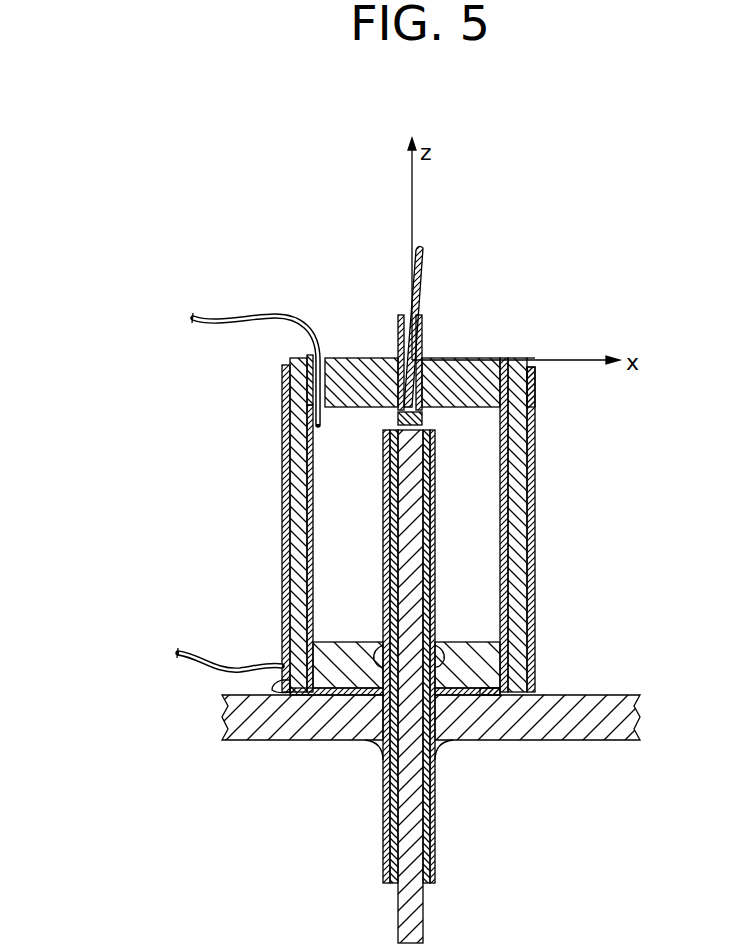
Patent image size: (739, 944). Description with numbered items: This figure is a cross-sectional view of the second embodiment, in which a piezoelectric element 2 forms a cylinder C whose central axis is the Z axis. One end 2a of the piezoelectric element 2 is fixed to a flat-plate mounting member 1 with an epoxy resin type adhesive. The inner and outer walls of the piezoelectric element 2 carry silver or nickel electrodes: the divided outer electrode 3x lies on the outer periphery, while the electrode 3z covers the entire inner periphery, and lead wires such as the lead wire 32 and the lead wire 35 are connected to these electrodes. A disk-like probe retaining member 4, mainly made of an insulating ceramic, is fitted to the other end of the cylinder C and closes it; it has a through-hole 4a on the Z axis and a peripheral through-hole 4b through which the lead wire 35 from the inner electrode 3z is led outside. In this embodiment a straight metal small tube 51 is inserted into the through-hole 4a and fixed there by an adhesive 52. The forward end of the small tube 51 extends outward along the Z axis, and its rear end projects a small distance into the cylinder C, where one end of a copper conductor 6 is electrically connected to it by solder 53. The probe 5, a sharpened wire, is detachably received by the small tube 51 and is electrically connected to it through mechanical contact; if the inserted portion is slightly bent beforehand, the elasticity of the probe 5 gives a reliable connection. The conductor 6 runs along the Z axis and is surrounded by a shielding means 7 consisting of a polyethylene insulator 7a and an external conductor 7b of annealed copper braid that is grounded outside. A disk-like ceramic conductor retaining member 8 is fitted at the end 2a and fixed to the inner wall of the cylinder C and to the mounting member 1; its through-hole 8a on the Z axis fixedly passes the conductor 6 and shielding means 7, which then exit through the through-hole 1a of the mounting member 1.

The mounting member 1 is at (578, 697).
The through-hole 1a is at (372, 728).
The piezoelectric element 2 is at (290, 392).
The one end of the piezoelectric element 2a is at (300, 695).
The outer electrode 3x is at (282, 437).
The inner electrode 3z is at (300, 500).
The probe retaining member 4 is at (419, 350).
The through-hole 4a is at (434, 382).
The through-hole 4b is at (305, 354).
The probe 5 is at (423, 251).
The small tube 51 is at (423, 326).
The adhesive 52 is at (400, 352).
The solder 53 is at (398, 418).
The conductor 6 is at (412, 458).
The shielding means 7 is at (489, 656).
The insulator 7a is at (427, 536).
The external conductor 7b is at (436, 585).
The conductor retaining member 8 is at (472, 652).
The through-hole 8a is at (378, 654).
The lead wire 32 is at (180, 651).
The lead wire 35 is at (230, 315).
The cylinder C is at (528, 360).